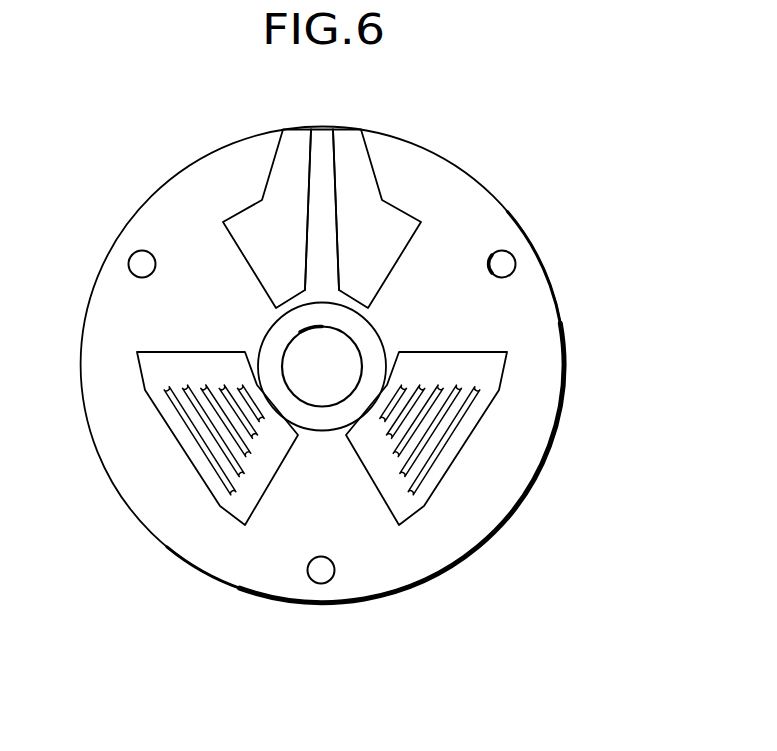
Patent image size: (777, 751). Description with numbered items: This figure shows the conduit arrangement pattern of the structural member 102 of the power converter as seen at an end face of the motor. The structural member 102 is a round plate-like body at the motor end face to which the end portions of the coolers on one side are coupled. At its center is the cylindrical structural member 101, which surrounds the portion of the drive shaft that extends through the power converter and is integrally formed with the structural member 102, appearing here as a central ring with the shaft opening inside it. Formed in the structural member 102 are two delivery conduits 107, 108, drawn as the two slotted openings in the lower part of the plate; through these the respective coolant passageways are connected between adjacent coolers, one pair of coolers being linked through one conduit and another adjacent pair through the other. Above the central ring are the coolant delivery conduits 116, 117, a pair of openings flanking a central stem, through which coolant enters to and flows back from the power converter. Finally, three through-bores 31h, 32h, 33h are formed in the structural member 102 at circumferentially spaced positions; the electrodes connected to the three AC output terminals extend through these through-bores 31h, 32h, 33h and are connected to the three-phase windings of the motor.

The structural member 102 is at (458, 198).
The cylindrical structural member 101 is at (363, 342).
The coolant delivery conduit 116 is at (362, 168).
The coolant delivery conduit 117 is at (283, 168).
The delivery conduit 107 is at (452, 445).
The delivery conduit 108 is at (192, 443).
The through-bore 31h is at (321, 572).
The through-bore 32h is at (505, 265).
The through-bore 33h is at (138, 263).